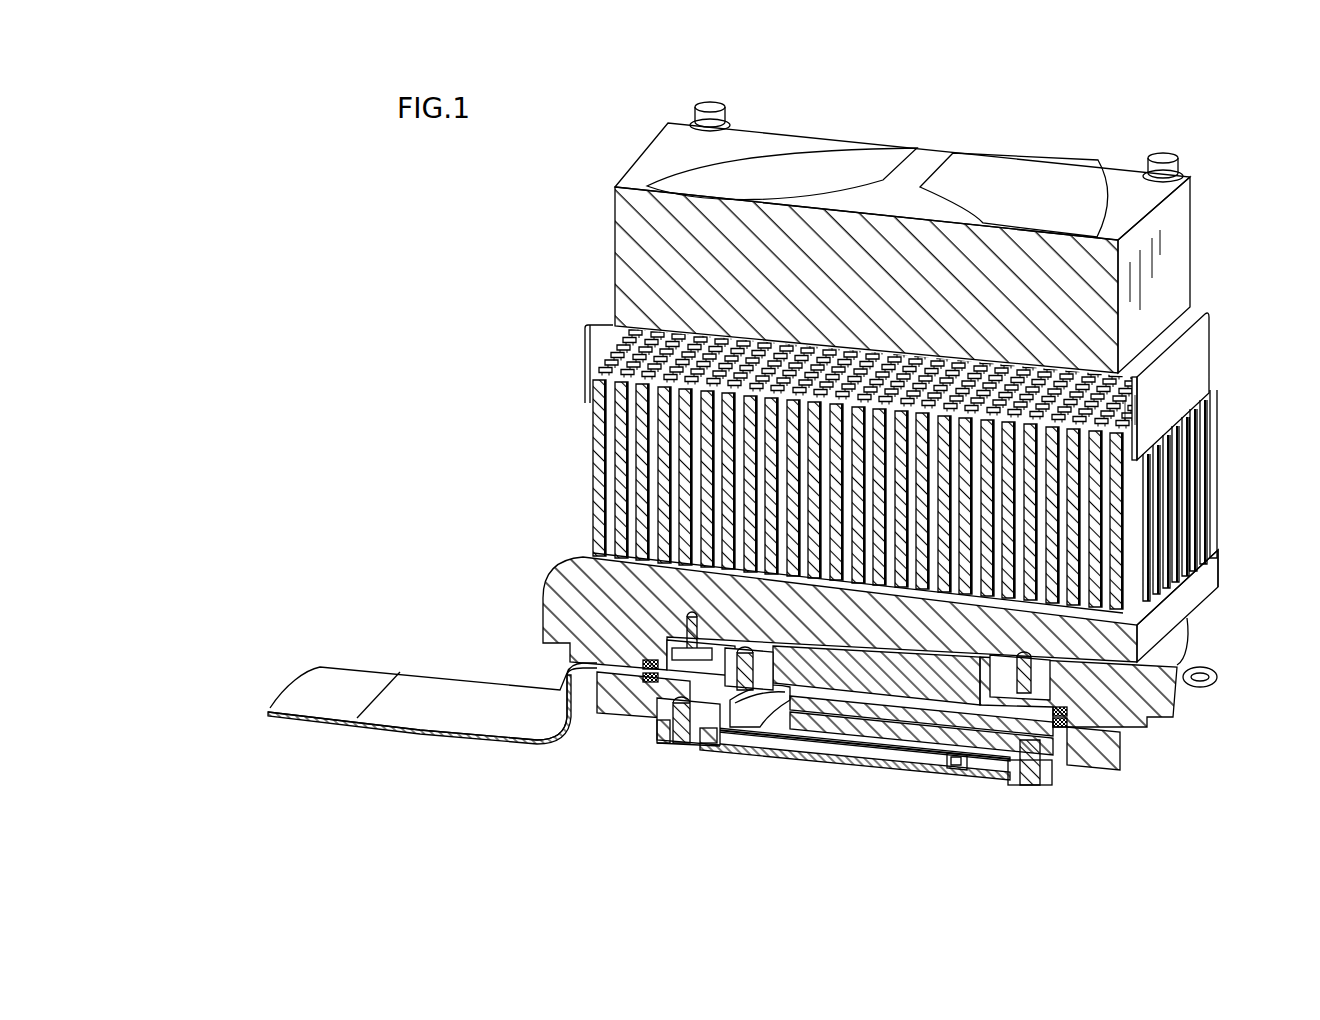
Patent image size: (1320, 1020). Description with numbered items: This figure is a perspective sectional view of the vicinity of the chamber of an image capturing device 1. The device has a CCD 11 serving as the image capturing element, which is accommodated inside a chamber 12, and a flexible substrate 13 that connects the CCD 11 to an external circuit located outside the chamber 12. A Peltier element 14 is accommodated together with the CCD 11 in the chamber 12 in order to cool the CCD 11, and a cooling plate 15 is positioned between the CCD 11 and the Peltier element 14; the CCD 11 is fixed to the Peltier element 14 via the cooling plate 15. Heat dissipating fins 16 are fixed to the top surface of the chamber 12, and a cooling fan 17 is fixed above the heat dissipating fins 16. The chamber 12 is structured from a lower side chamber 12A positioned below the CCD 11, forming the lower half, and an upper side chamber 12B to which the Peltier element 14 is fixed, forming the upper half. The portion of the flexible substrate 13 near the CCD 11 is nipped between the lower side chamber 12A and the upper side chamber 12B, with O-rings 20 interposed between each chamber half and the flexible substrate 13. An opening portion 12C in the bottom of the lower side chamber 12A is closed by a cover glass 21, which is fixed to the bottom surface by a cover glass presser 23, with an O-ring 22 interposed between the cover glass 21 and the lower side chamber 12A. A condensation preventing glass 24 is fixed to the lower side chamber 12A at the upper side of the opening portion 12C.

The image capturing device 1 is at (1228, 558).
The CCD 11 is at (848, 720).
The chamber 12 is at (627, 712).
The lower side chamber 12A is at (1095, 767).
The upper side chamber 12B is at (1117, 693).
The opening portion 12C is at (955, 760).
The flexible substrate 13 is at (532, 723).
The Peltier element 14 is at (835, 672).
The cooling plate 15 is at (908, 705).
The heat dissipating fins 16 is at (1202, 450).
The cooling fan 17 is at (1182, 248).
The O-rings 20 is at (1053, 717).
The cover glass 21 is at (822, 753).
The O-ring 22 is at (742, 747).
The cover glass presser 23 is at (710, 747).
The condensation preventing glass 24 is at (873, 738).